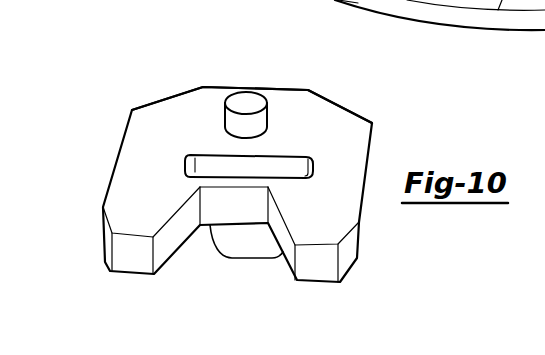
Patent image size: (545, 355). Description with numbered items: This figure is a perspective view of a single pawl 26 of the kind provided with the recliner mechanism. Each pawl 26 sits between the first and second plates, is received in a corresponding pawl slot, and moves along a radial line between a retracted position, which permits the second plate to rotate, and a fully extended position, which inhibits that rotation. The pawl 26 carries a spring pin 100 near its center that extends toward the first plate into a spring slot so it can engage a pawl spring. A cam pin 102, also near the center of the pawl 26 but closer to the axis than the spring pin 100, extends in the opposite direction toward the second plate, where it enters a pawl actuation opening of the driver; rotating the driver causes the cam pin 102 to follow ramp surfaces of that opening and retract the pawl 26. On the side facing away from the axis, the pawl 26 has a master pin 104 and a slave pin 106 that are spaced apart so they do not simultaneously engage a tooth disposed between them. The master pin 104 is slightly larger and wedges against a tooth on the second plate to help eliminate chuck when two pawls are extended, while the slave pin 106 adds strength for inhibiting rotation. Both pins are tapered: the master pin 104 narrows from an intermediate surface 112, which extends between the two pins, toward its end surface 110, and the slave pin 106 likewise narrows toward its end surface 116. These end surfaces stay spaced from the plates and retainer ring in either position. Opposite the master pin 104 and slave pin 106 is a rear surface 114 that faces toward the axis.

The pawl 26 is at (172, 78).
The spring pin 100 is at (242, 247).
The cam pin 102 is at (250, 98).
The master pin 104 is at (135, 188).
The slave pin 106 is at (325, 205).
The end surface 110 is at (130, 260).
The intermediate surface 112 is at (227, 205).
The rear surface 114 is at (216, 88).
The end surface 116 is at (317, 267).